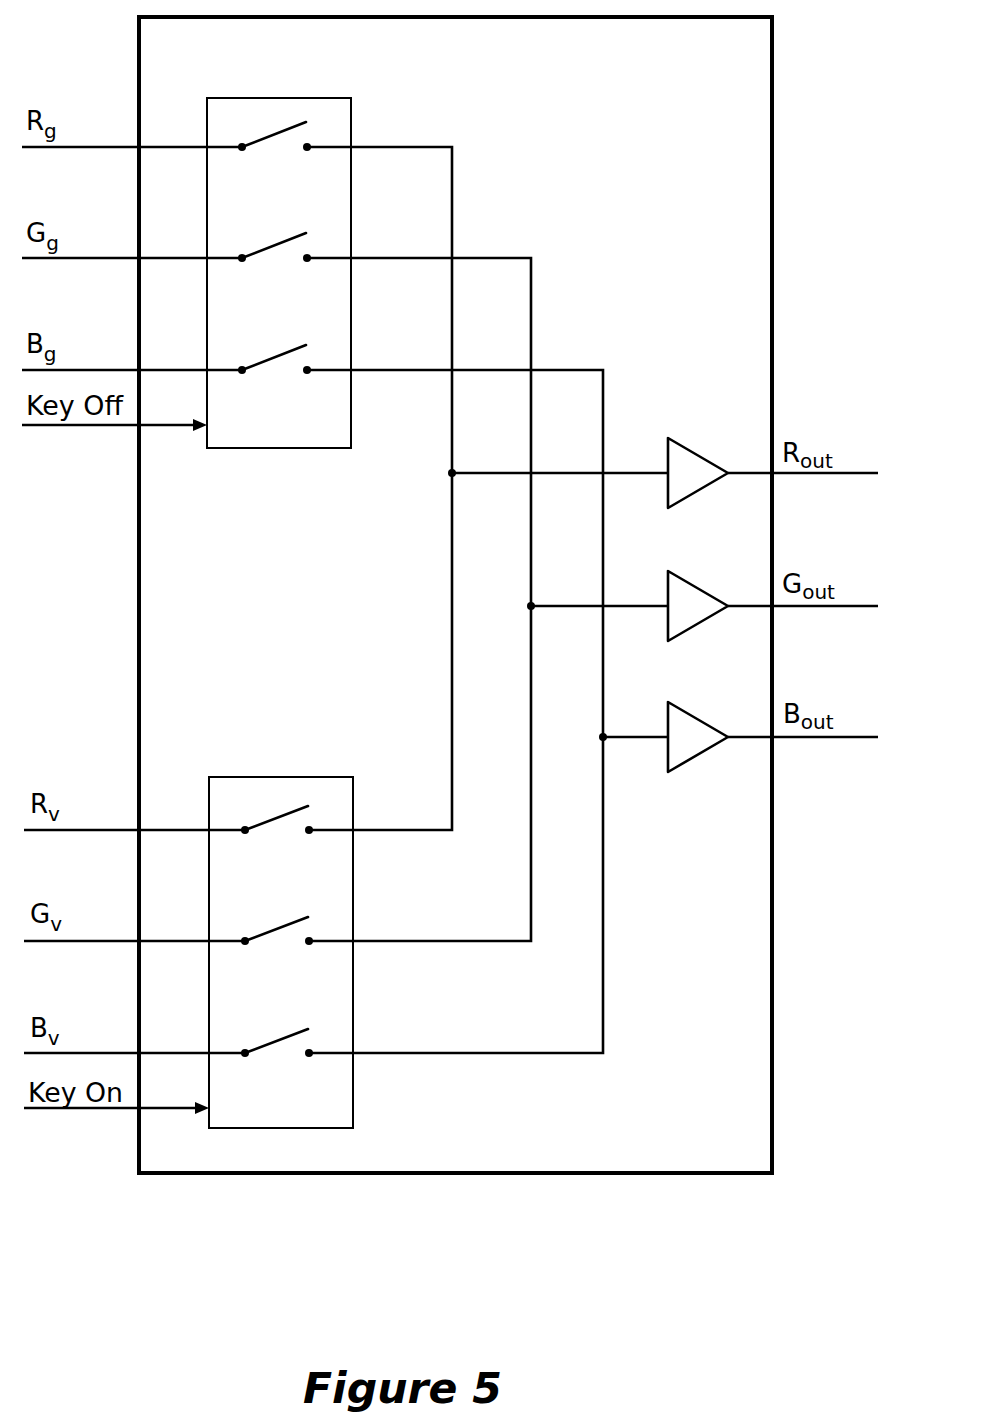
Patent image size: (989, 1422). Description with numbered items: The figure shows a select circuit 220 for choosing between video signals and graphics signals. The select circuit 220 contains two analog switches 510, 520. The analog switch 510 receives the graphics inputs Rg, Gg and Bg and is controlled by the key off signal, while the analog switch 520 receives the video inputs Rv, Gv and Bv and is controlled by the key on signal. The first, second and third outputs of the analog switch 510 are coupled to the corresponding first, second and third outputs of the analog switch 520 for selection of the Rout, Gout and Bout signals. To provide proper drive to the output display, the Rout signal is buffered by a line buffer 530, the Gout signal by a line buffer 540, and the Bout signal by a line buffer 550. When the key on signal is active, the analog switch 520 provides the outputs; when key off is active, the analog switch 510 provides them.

The select circuit 220 is at (455, 595).
The analog switch 510 is at (272, 457).
The analog switch 520 is at (280, 770).
The line buffer 530 is at (697, 447).
The line buffer 540 is at (692, 579).
The line buffer 550 is at (697, 712).